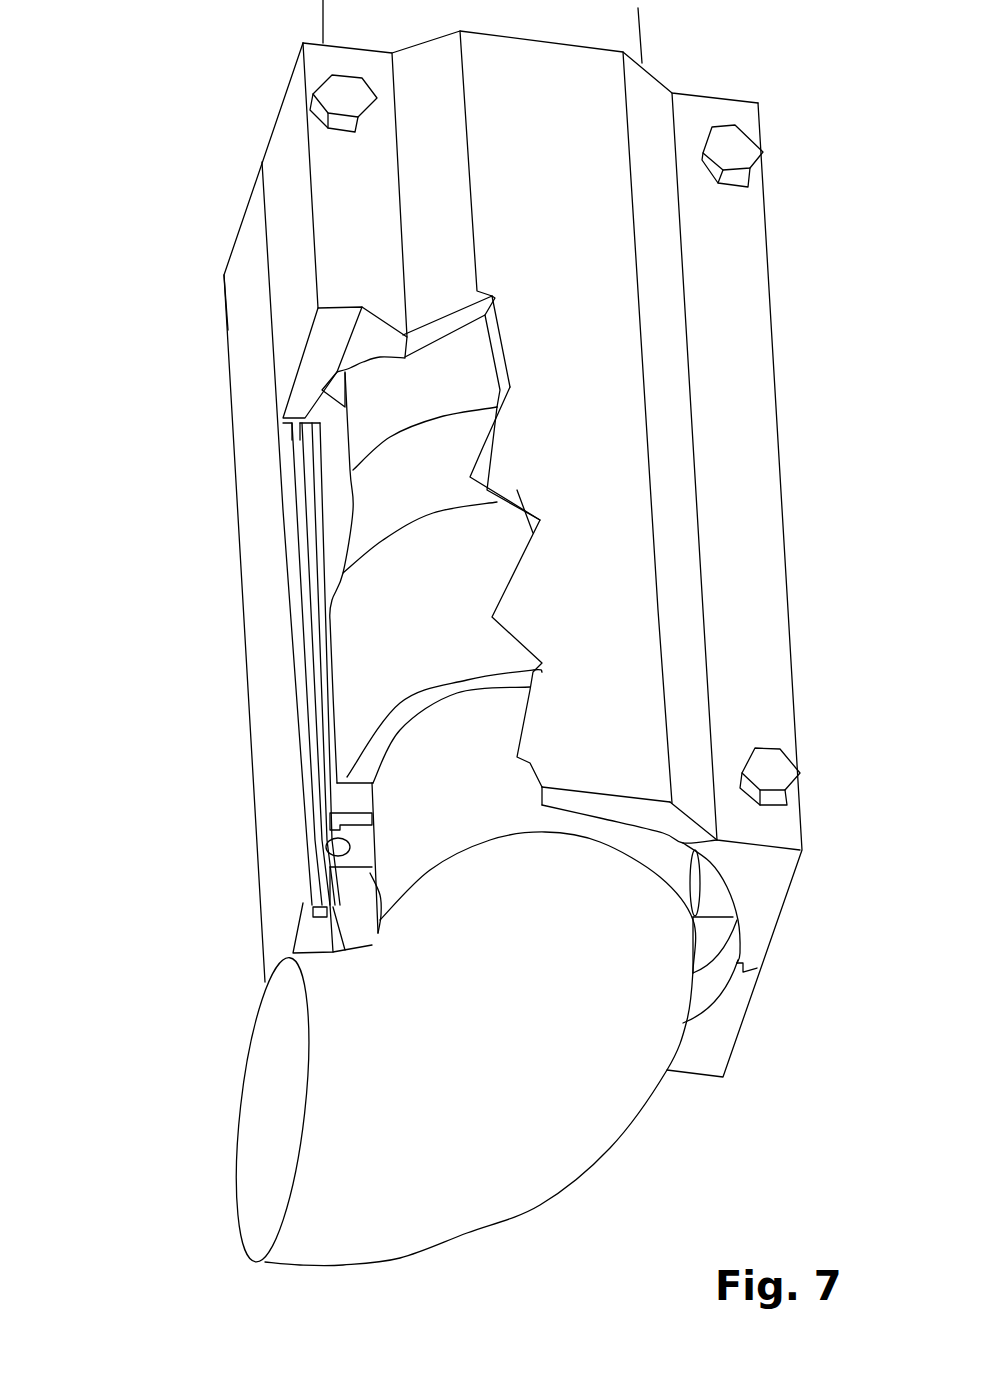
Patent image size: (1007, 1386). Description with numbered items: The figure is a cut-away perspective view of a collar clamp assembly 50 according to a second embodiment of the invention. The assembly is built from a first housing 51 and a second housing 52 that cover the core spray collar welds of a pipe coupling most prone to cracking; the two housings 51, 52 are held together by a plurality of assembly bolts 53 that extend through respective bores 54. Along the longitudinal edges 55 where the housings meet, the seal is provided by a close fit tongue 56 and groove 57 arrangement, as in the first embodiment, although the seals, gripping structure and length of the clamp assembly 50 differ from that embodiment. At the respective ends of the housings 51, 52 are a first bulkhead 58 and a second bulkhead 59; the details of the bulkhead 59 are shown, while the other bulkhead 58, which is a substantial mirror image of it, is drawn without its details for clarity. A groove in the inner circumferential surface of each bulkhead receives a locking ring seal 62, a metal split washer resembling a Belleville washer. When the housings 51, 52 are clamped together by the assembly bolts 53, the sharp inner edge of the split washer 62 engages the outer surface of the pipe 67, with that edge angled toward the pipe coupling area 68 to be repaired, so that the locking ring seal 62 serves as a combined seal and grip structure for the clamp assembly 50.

The collar clamp assembly 50 is at (178, 698).
The first housing 51 is at (240, 327).
The second housing 52 is at (285, 215).
The assembly bolt 53 is at (333, 92).
The bore 54 is at (335, 845).
The longitudinal edge 55 is at (280, 380).
The tongue 56 is at (287, 432).
The groove 57 is at (302, 553).
The first bulkhead 58 is at (340, 387).
The second bulkhead 59 is at (350, 892).
The locking ring seal 62 is at (347, 813).
The pipe 67 is at (417, 795).
The pipe coupling area 68 is at (357, 647).